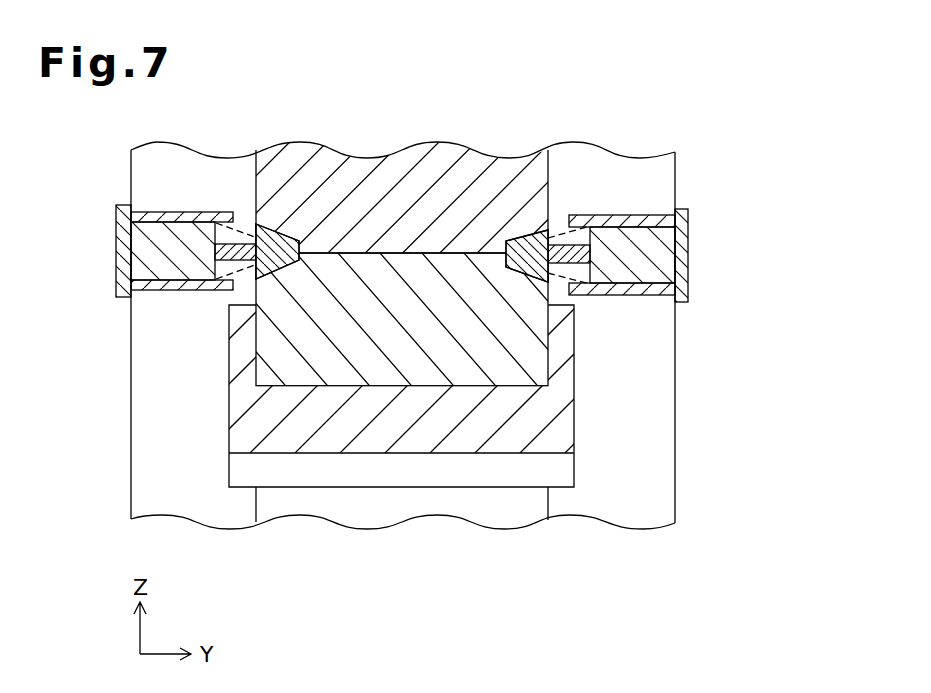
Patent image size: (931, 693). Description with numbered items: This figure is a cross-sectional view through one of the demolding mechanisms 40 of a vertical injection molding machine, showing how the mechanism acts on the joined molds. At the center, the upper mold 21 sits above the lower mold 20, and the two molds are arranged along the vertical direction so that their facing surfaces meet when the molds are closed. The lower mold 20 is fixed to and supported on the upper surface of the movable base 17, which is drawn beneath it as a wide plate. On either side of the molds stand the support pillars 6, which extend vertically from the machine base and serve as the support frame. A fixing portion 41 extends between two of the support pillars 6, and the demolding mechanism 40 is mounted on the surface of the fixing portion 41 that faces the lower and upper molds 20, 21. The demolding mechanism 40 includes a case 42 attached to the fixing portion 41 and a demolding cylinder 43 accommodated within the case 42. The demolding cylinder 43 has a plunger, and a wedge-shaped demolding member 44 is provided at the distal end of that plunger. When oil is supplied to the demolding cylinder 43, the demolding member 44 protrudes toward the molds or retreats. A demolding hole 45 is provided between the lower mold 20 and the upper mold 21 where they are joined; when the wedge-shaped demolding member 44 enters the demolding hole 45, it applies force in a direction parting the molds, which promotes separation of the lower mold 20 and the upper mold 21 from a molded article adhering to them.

The support pillar 6 is at (659, 372).
The movable base 17 is at (561, 421).
The lower mold 20 is at (531, 345).
The upper mold 21 is at (534, 178).
The demolding mechanism 40 is at (89, 193).
The fixing portion 41 is at (123, 227).
The case 42 is at (173, 212).
The demolding cylinder 43 is at (158, 266).
The demolding member 44 is at (257, 225).
The demolding hole 45 is at (253, 271).